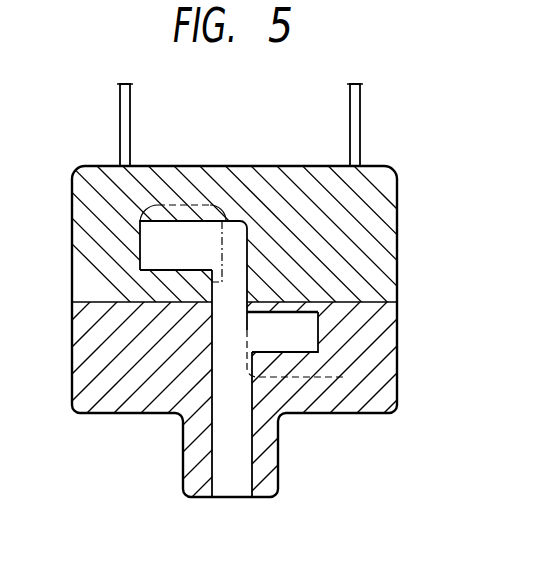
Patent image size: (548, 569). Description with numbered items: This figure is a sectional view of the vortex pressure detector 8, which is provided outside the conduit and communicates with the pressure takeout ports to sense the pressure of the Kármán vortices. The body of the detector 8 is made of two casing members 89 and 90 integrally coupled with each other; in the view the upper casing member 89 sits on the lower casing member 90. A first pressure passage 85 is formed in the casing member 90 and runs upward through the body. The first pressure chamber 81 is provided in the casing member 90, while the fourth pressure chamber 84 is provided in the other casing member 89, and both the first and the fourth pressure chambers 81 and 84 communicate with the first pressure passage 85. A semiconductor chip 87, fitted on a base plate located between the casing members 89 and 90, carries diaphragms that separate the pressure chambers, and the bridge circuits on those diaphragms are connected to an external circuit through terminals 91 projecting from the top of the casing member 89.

The vortex pressure detector 8 is at (403, 190).
The first pressure chamber 81 is at (298, 342).
The fourth pressure chamber 84 is at (186, 228).
The first pressure passage 85 is at (222, 459).
The semiconductor chip 87 is at (315, 314).
The casing member 89 is at (72, 232).
The casing member 90 is at (72, 339).
The terminals 91 is at (120, 109).